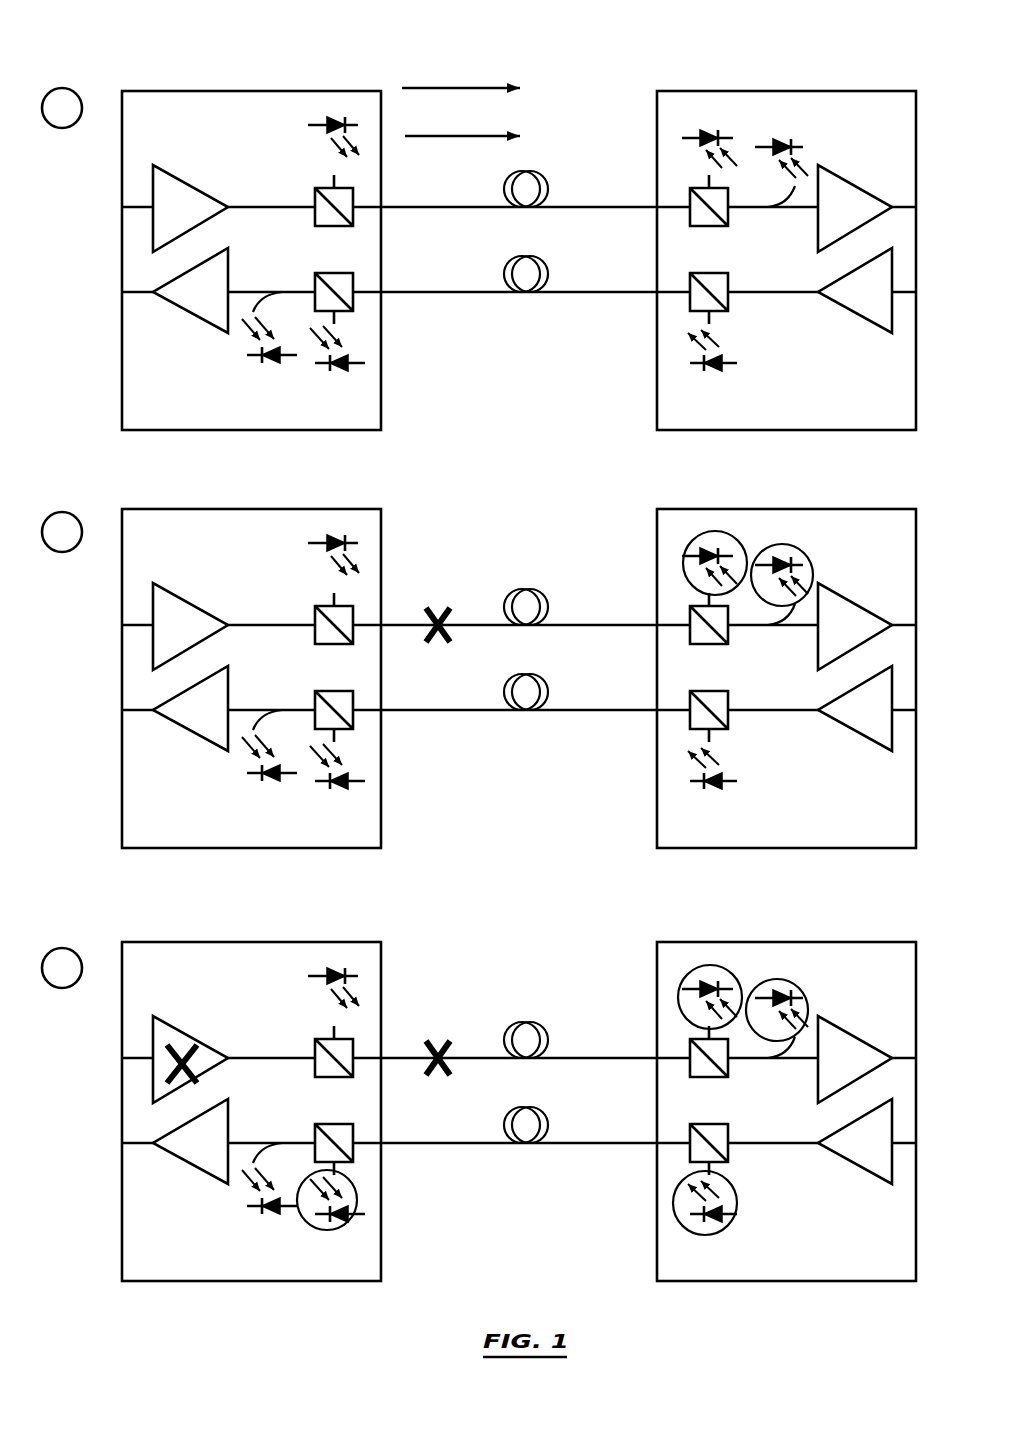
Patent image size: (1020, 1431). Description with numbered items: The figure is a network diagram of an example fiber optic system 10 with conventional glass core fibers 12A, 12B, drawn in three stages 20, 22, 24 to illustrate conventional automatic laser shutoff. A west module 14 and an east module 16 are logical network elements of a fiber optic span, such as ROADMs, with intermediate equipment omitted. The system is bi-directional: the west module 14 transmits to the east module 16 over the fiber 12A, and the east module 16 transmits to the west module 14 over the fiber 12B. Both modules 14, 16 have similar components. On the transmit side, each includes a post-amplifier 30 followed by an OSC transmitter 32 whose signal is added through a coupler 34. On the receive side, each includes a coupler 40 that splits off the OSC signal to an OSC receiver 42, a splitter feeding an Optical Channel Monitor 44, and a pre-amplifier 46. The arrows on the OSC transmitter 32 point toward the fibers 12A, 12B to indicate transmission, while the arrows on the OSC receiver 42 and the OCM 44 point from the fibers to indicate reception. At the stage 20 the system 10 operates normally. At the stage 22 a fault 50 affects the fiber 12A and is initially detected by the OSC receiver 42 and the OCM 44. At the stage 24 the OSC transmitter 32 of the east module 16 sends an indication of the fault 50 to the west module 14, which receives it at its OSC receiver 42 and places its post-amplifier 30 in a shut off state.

The fiber optic system 10 is at (568, 42).
The fiber 12A is at (495, 209).
The fiber 12B is at (493, 294).
The west module 14 is at (345, 60).
The east module 16 is at (879, 62).
The stage 20 is at (74, 92).
The stage 22 is at (74, 516).
The stage 24 is at (74, 952).
The post-amplifier 30 is at (192, 182).
The OSC transmitter 32 is at (318, 123).
The coupler 34 is at (316, 224).
The coupler 40 is at (356, 280).
The OSC receiver 42 is at (323, 363).
The Optical Channel Monitor 44 is at (252, 354).
The pre-amplifier 46 is at (186, 313).
The fault 50 is at (445, 610).